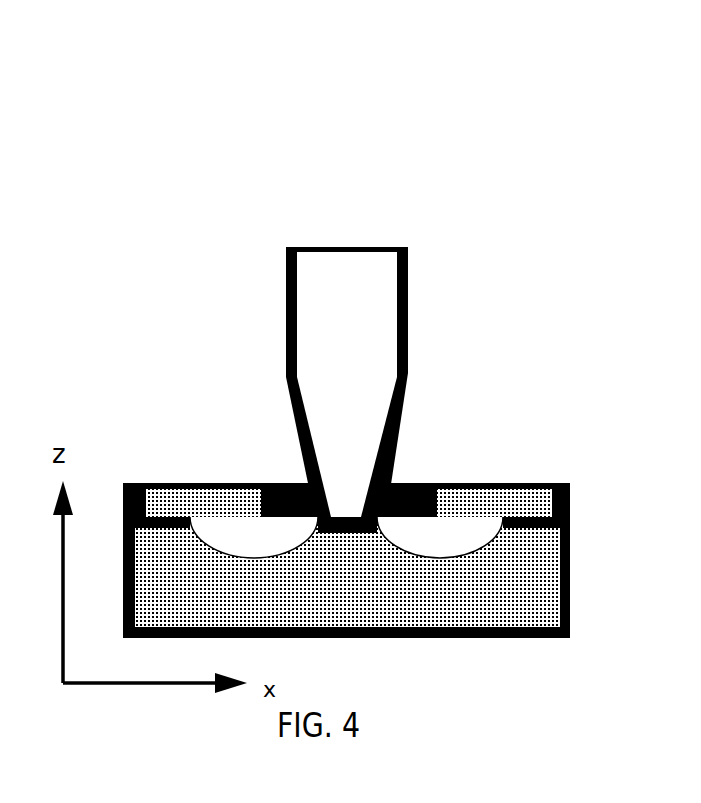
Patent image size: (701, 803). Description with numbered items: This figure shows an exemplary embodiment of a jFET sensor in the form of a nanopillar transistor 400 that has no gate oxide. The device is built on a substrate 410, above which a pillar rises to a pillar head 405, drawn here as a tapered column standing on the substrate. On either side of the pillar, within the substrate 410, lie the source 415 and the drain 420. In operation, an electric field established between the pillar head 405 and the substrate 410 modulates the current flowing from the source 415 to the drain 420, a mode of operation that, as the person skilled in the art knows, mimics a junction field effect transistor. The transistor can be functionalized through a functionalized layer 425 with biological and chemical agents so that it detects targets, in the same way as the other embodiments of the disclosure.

The nanopillar transistor 400 is at (535, 32).
The pillar head 405 is at (378, 247).
The substrate 410 is at (352, 562).
The source 415 is at (243, 535).
The drain 420 is at (405, 523).
The functionalized layer 425 is at (335, 223).